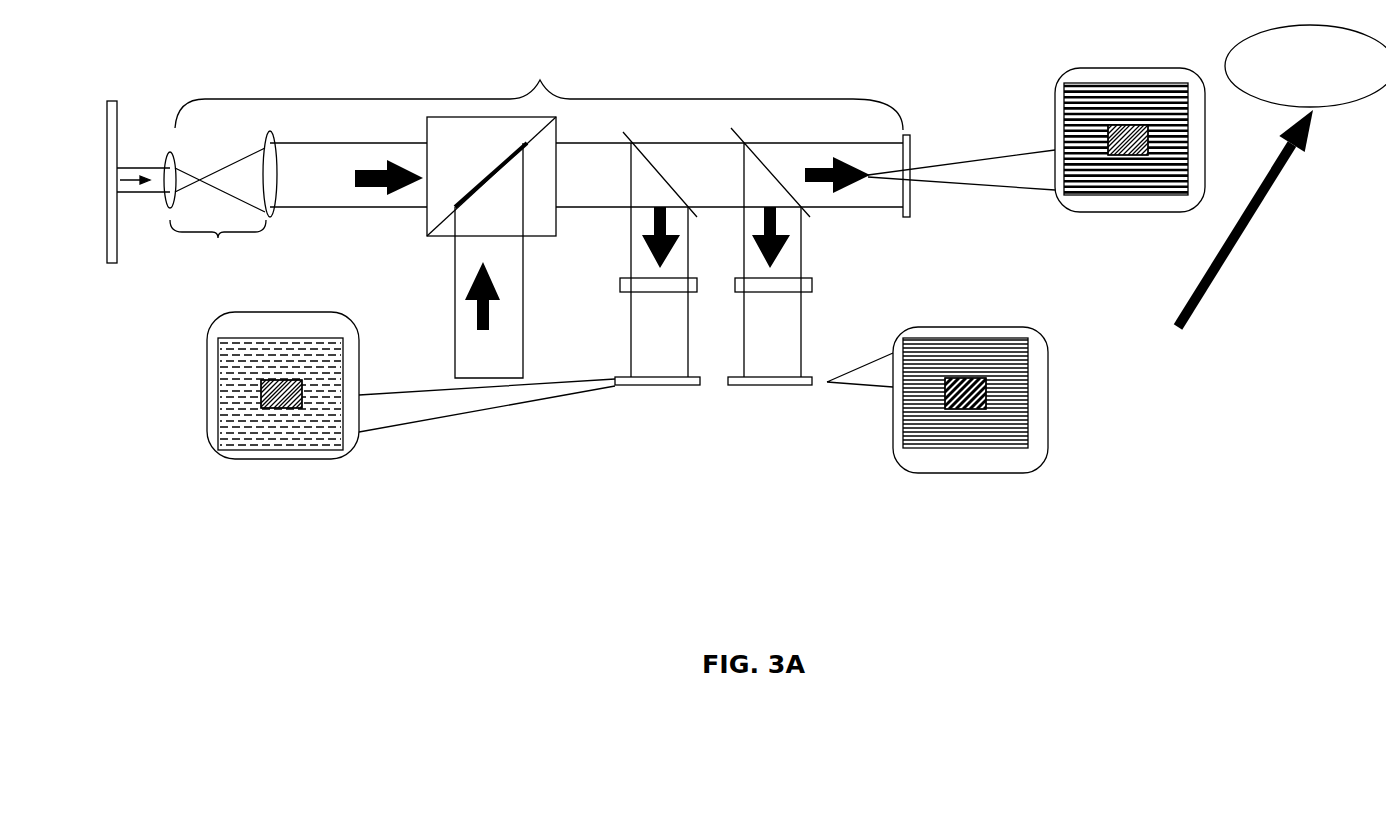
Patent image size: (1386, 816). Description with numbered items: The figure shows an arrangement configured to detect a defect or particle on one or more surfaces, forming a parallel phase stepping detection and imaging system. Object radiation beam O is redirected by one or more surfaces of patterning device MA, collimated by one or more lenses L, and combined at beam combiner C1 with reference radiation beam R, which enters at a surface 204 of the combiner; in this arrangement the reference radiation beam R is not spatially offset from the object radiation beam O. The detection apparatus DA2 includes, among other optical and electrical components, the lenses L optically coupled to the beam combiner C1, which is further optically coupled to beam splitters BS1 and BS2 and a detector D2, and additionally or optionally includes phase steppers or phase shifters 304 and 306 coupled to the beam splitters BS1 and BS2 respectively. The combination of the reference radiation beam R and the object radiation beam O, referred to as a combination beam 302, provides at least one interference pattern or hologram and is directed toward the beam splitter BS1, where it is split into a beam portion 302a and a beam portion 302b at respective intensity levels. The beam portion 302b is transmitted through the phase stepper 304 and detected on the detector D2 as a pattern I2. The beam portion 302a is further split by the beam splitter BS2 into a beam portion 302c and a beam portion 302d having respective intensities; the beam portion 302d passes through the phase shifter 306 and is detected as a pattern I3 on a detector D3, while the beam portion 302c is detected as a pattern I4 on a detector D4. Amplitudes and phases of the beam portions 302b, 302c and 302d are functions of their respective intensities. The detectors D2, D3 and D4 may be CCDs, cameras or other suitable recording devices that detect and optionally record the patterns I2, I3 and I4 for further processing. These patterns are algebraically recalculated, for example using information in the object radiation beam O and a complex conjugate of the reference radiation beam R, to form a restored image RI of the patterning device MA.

The object radiation beam O is at (272, 173).
The patterning device MA is at (118, 240).
The lenses L is at (220, 202).
The beam combiner C1 is at (425, 218).
The surface of combiner 204 is at (428, 237).
The reference radiation beam R is at (489, 307).
The combination beam 302 is at (583, 170).
The detection apparatus DA2 is at (539, 90).
The beam splitter BS1 is at (620, 132).
The beam splitter BS2 is at (732, 130).
The beam portion 302a is at (687, 158).
The beam portion 302b is at (637, 257).
The beam portion 302c is at (832, 147).
The beam portion 302d is at (782, 258).
The phase stepper 304 is at (620, 280).
The phase shifter 306 is at (813, 280).
The detector D2 is at (655, 385).
The detector D3 is at (765, 385).
The detector D4 is at (903, 217).
The pattern I2 is at (293, 450).
The pattern I3 is at (977, 448).
The pattern I4 is at (1150, 197).
The restored image RI is at (1282, 176).